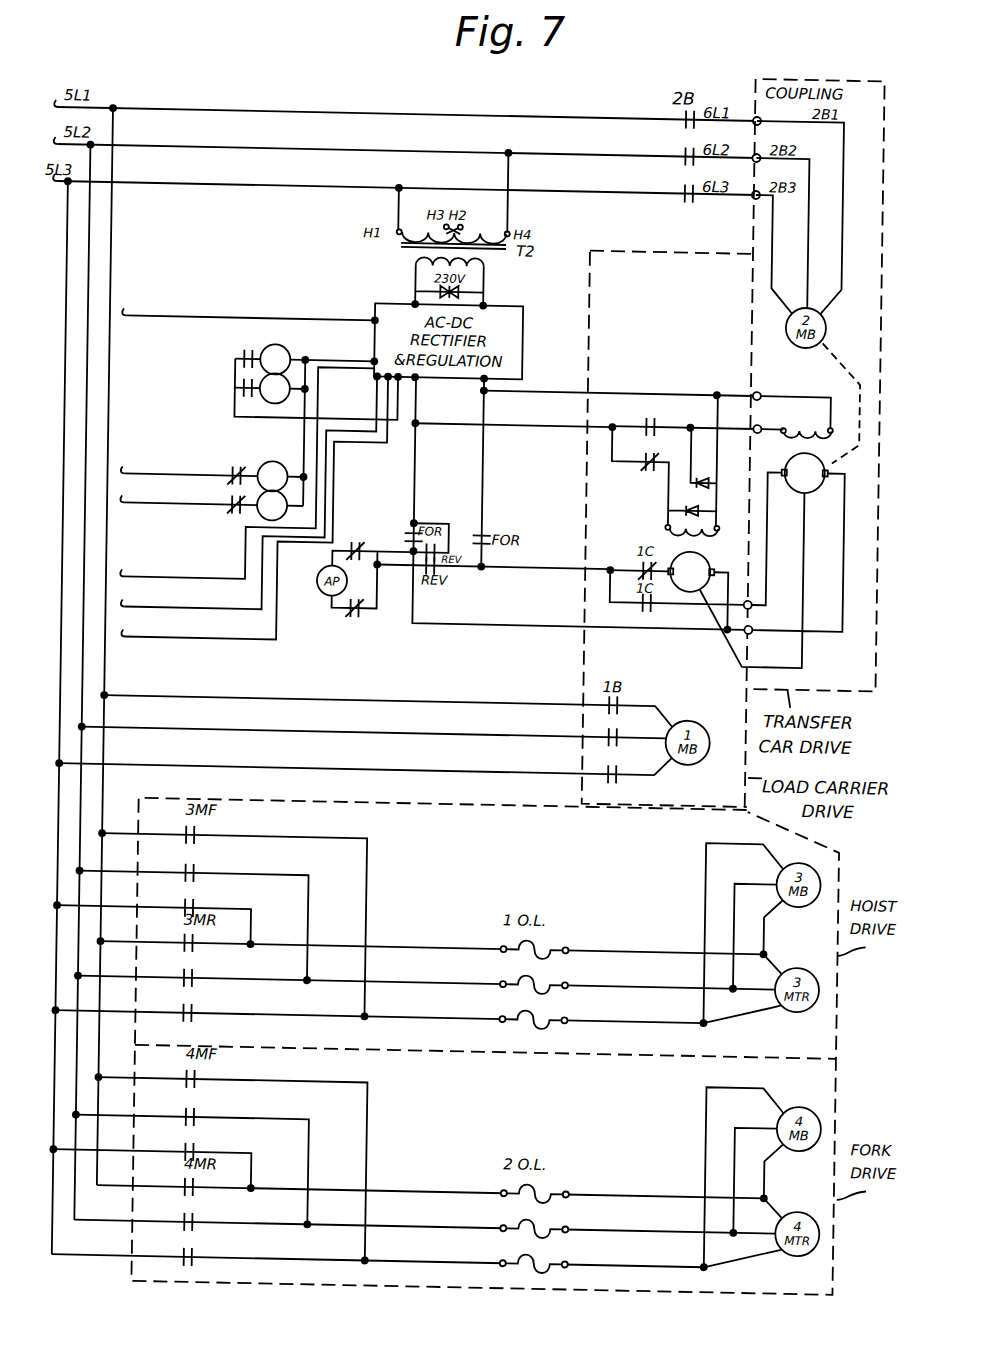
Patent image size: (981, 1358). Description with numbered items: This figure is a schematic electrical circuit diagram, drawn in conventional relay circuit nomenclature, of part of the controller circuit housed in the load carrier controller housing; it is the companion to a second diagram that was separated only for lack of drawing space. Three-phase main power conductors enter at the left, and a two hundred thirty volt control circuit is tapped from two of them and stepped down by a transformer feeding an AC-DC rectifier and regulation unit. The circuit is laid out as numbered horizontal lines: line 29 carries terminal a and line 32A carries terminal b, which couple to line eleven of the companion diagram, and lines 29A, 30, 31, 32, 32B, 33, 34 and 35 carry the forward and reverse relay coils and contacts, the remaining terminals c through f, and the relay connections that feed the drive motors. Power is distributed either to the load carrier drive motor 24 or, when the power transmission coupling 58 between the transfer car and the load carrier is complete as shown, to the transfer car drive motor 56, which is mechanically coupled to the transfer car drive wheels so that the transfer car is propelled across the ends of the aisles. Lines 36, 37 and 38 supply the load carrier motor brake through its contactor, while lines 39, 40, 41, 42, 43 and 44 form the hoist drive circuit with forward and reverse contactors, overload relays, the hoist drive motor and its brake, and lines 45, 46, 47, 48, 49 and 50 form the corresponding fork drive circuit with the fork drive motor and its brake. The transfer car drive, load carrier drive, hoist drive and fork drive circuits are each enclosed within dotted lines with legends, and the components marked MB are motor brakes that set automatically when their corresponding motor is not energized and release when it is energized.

The load carrier drive motor 24 is at (712, 547).
The transfer car drive motor 56 is at (824, 478).
The power transmission coupling 58 is at (785, 93).
The line 29 is at (205, 311).
The line 29A is at (199, 352).
The line 30 is at (170, 390).
The line 31 is at (408, 414).
The line 32 is at (376, 459).
The line 32A is at (164, 469).
The line 32B is at (161, 498).
The line 33 is at (202, 475).
The line 34 is at (203, 494).
The line 35 is at (208, 509).
The line 36 is at (350, 700).
The line 37 is at (346, 727).
The line 38 is at (349, 764).
The line 39 is at (196, 921).
The line 40 is at (168, 922).
The line 41 is at (139, 922).
The line 42 is at (403, 930).
The line 43 is at (400, 934).
The line 44 is at (403, 932).
The line 45 is at (195, 1165).
The line 46 is at (166, 1166).
The line 47 is at (138, 1166).
The line 48 is at (401, 1174).
The line 49 is at (398, 1178).
The line 50 is at (402, 1176).